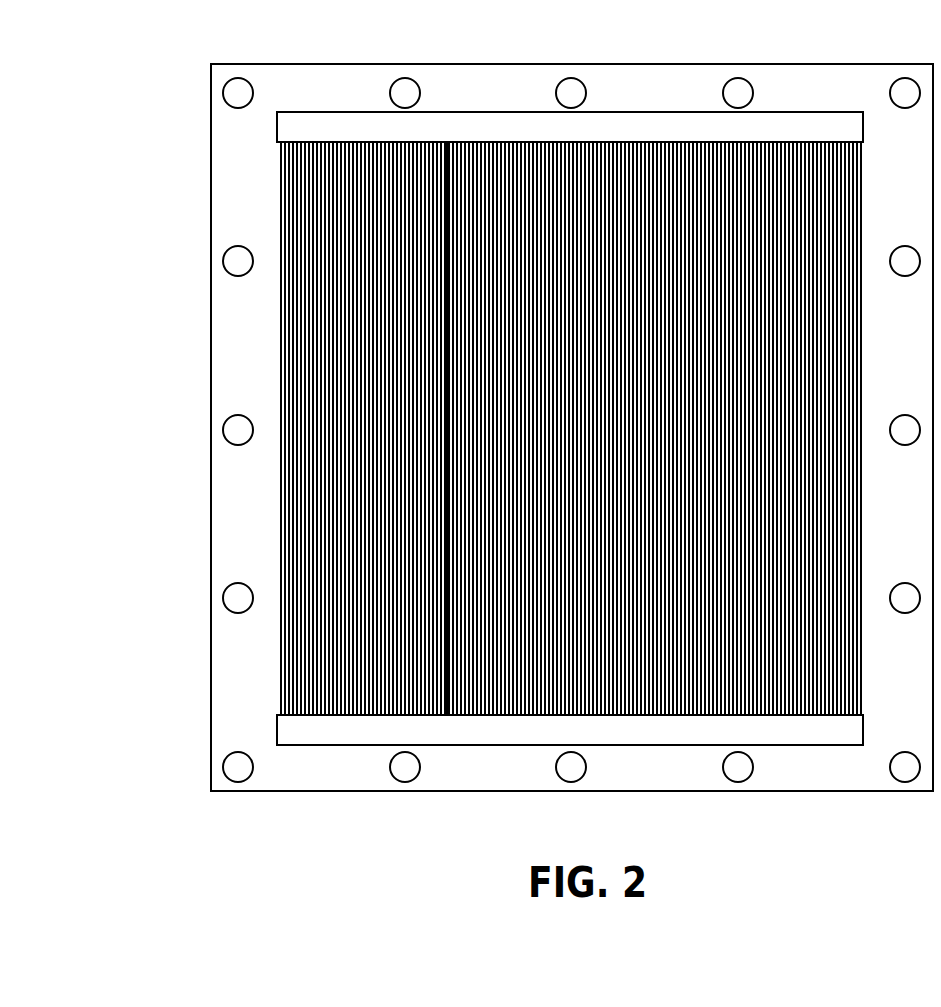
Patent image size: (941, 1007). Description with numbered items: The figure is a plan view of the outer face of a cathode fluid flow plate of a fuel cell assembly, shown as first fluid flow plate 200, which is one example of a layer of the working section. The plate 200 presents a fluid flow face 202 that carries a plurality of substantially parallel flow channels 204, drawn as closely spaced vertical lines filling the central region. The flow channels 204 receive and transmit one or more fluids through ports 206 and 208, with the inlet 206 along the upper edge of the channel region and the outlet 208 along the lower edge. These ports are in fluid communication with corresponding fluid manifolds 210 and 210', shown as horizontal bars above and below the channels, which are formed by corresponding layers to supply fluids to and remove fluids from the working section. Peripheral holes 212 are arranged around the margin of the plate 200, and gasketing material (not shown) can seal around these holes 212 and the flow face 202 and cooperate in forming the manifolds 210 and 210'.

The first fluid flow plate 200 is at (175, 114).
The fluid flow face 202 is at (270, 192).
The flow channels 204 is at (265, 348).
The port (inlet) 206 is at (481, 143).
The port (outlet) 208 is at (448, 715).
The fluid manifold 210 is at (570, 76).
The fluid manifold 210' is at (485, 742).
The peripheral holes 212 is at (223, 269).